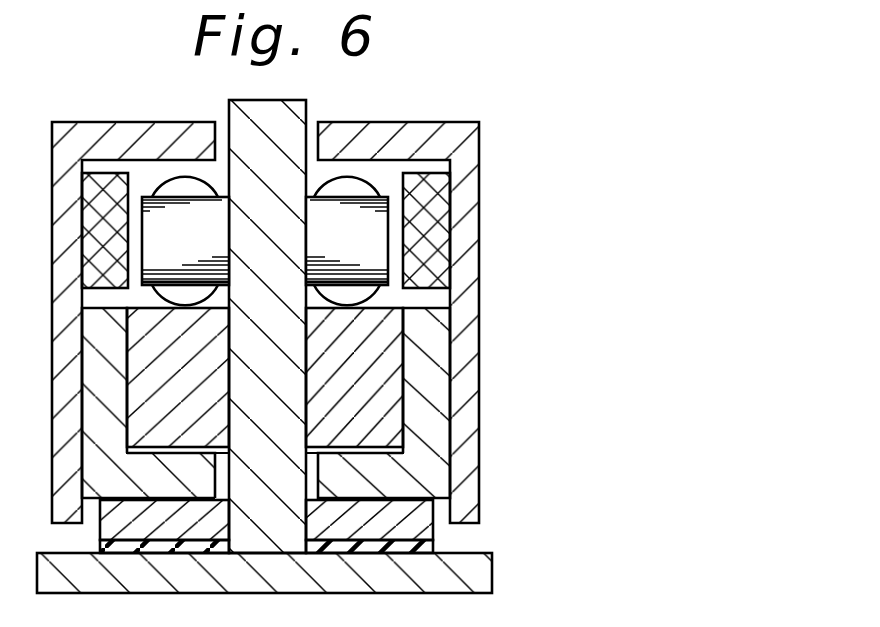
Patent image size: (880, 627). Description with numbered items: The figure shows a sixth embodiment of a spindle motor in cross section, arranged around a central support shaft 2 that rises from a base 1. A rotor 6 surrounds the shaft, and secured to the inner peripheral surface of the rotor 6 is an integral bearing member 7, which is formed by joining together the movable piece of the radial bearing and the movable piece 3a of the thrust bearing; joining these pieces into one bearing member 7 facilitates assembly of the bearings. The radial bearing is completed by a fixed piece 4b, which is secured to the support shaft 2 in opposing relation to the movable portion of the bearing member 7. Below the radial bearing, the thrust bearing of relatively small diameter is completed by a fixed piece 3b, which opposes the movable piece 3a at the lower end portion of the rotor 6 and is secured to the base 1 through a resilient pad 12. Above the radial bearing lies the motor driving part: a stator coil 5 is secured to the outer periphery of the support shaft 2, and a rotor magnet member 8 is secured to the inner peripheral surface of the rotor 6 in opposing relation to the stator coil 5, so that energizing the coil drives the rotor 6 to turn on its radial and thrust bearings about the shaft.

The base 1 is at (477, 577).
The support shaft 2 is at (290, 127).
The movable piece of the thrust bearing 3a is at (385, 480).
The fixed piece of the thrust bearing 3b is at (418, 512).
The fixed piece of the radial bearing 4b is at (400, 346).
The stator coil 5 is at (368, 235).
The rotor 6 is at (460, 143).
The bearing member 7 is at (445, 418).
The rotor magnet member 8 is at (437, 258).
The resilient pad 12 is at (438, 541).